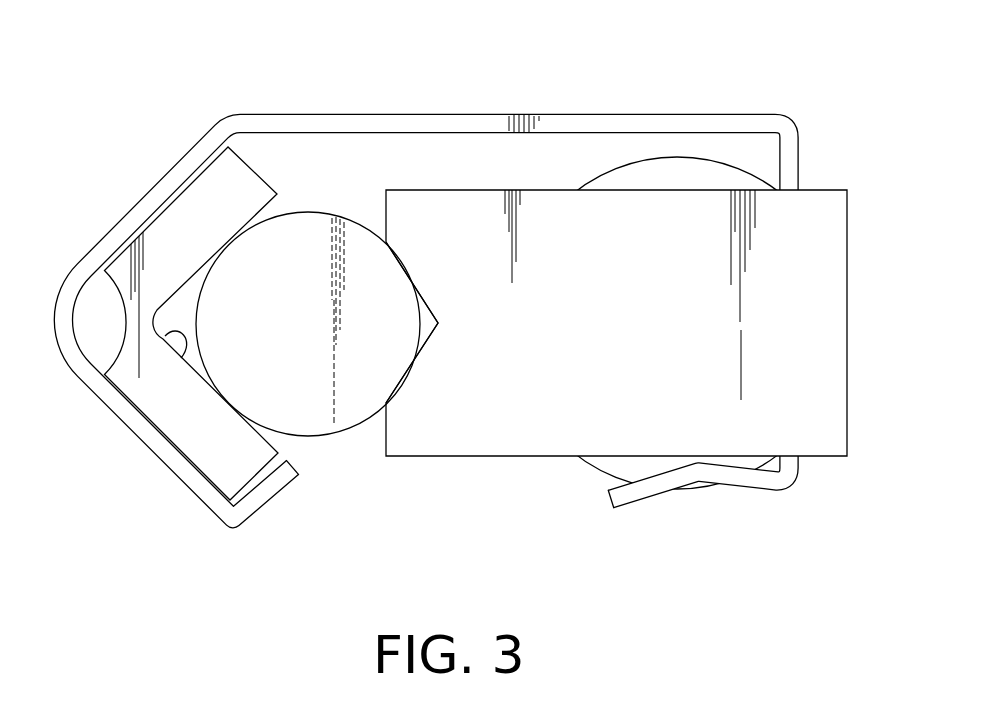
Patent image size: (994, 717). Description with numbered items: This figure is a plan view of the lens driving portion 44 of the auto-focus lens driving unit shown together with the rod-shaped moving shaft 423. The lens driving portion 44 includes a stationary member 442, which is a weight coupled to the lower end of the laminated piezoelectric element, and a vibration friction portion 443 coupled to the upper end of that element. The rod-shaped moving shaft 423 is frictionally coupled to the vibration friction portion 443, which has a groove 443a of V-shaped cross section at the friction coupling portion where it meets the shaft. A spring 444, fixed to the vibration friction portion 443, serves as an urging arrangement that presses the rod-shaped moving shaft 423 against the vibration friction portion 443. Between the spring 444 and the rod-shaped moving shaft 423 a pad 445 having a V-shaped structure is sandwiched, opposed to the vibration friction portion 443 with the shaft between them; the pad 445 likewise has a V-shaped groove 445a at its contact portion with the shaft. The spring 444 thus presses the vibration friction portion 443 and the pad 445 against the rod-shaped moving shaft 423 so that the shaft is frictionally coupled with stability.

The lens driving portion 44 is at (490, 263).
The stationary member 442 is at (682, 168).
The vibration friction portion 443 is at (657, 354).
The groove 443a is at (424, 352).
The spring 444 is at (402, 123).
The pad 445 is at (165, 334).
The groove 445a is at (187, 360).
The rod-shaped moving shaft 423 is at (330, 434).